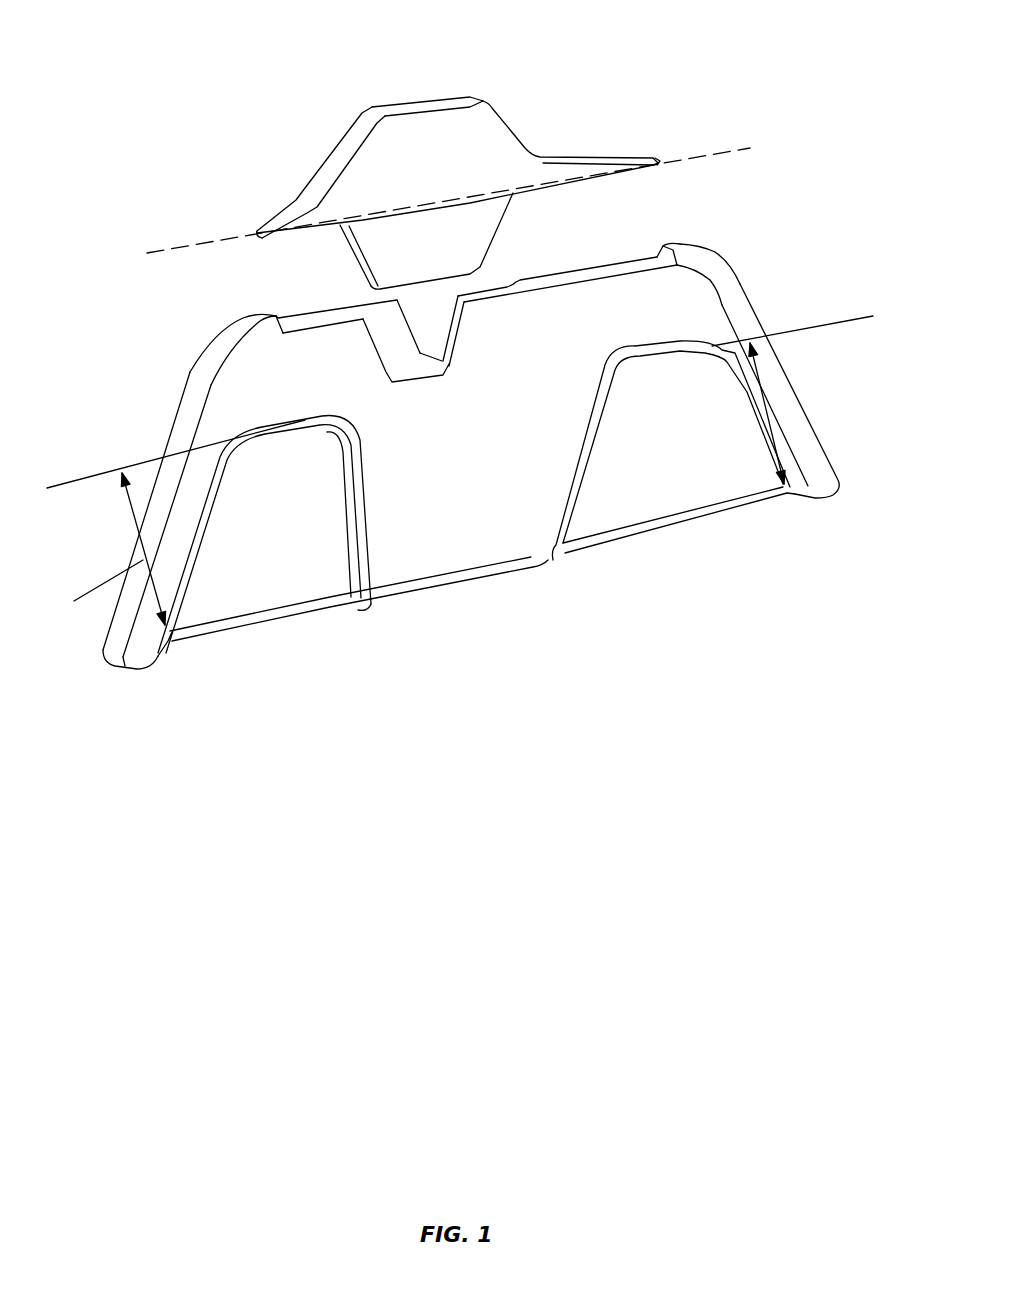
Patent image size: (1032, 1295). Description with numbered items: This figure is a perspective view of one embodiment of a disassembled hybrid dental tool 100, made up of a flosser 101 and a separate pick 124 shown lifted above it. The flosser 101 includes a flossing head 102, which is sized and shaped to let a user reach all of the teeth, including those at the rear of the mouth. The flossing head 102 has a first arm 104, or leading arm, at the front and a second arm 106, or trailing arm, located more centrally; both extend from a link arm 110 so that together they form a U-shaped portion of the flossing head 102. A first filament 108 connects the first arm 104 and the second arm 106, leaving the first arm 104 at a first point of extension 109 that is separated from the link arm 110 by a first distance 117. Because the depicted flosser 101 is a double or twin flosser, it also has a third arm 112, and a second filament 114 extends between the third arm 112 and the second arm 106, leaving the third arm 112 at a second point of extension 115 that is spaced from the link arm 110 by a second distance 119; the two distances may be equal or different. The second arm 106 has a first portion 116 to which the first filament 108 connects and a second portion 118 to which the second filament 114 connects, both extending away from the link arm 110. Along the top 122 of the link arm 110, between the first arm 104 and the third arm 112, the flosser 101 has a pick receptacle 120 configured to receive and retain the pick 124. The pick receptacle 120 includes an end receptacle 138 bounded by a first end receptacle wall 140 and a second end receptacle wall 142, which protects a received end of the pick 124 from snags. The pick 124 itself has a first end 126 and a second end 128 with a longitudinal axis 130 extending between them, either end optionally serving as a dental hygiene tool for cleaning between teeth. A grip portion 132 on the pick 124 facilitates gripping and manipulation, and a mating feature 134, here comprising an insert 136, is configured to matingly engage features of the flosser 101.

The hybrid dental tool 100 is at (796, 55).
The flosser 101 is at (780, 305).
The flossing head 102 is at (193, 372).
The first arm 104 is at (132, 556).
The second arm 106 is at (455, 595).
The first filament 108 is at (300, 618).
The first point of extension 109 is at (178, 656).
The link arm 110 is at (687, 245).
The third arm 112 is at (823, 441).
The second filament 114 is at (723, 512).
The second point of extension 115 is at (779, 512).
The first portion 116 is at (330, 495).
The first distance 117 is at (86, 587).
The second portion 118 is at (580, 487).
The second distance 119 is at (760, 377).
The pick receptacle 120 is at (580, 238).
The top 122 is at (247, 322).
The pick 124 is at (415, 95).
The first end 126 is at (257, 230).
The second end 128 is at (658, 157).
The longitudinal axis 130 is at (744, 147).
The grip portion 132 is at (334, 147).
The mating feature 134 is at (500, 236).
The insert 136 is at (358, 262).
The end receptacle 138 is at (583, 268).
The first end receptacle wall 140 is at (278, 318).
The second end receptacle wall 142 is at (672, 243).